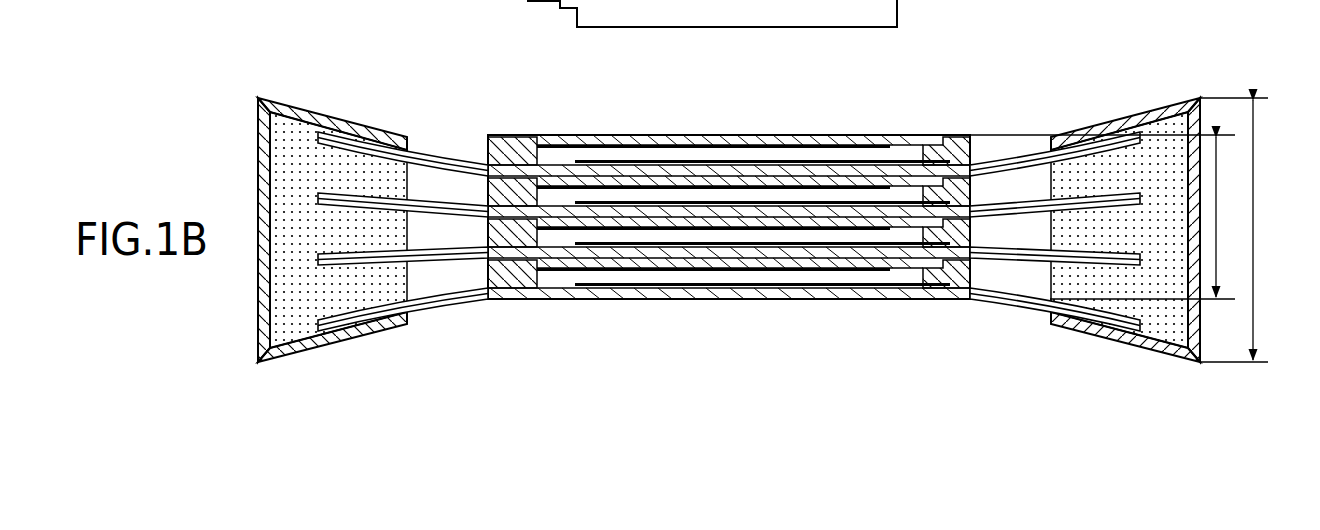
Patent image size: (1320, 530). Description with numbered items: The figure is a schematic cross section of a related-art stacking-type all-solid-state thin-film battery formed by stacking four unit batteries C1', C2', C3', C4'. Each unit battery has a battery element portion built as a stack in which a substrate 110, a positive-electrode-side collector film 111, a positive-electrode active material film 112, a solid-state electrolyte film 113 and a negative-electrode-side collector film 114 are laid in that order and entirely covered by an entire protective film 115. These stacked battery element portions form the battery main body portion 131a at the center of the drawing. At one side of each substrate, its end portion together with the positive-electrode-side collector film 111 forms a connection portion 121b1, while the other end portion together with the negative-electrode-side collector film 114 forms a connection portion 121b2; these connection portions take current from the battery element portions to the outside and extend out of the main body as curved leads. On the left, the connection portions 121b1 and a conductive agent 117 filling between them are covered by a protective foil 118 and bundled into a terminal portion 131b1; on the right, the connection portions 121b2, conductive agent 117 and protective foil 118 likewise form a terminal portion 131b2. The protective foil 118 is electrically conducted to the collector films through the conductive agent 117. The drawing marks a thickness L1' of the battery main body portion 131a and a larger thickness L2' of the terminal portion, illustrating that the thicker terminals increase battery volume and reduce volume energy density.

The substrate 110 is at (571, 300).
The positive-electrode-side collector film 111 is at (627, 300).
The positive-electrode active material film 112 is at (670, 300).
The solid-state electrolyte film 113 is at (704, 300).
The negative-electrode-side collector film 114 is at (748, 300).
The entire protective film 115 is at (783, 300).
The conductive agent 117 is at (280, 335).
The protective foil 118 is at (276, 106).
The connection portion 121b1 is at (323, 132).
The connection portion 121b2 is at (1037, 204).
The battery main body portion 131a is at (757, 132).
The terminal portion 131b1 is at (255, 104).
The terminal portion 131b2 is at (1191, 95).
The unit battery C1' is at (474, 291).
The unit battery C2' is at (445, 282).
The unit battery C3' is at (451, 143).
The unit battery C4' is at (446, 113).
The thickness of the battery main body portion L1' is at (1108, 217).
The thickness of the terminal portion L2' is at (1243, 230).